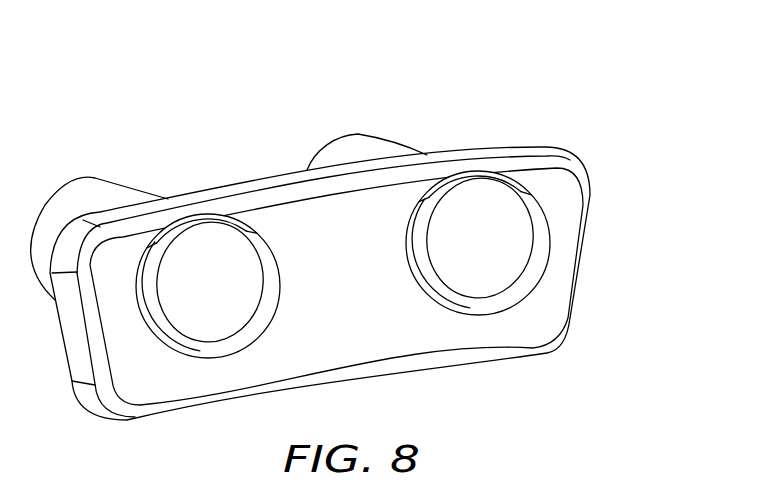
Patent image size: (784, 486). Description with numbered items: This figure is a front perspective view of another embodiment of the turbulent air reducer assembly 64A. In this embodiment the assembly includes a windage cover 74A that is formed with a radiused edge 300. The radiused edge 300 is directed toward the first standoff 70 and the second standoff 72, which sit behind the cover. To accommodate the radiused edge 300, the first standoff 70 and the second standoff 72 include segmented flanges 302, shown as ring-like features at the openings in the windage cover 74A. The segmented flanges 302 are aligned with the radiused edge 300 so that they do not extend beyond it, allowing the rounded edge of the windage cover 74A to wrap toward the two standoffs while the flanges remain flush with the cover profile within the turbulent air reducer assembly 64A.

The turbulent air reducer assembly 64A is at (354, 217).
The first standoff 70 is at (73, 190).
The second standoff 72 is at (370, 147).
The windage cover 74A is at (250, 177).
The radiused edge 300 is at (580, 270).
The segmented flanges 302 is at (482, 177).